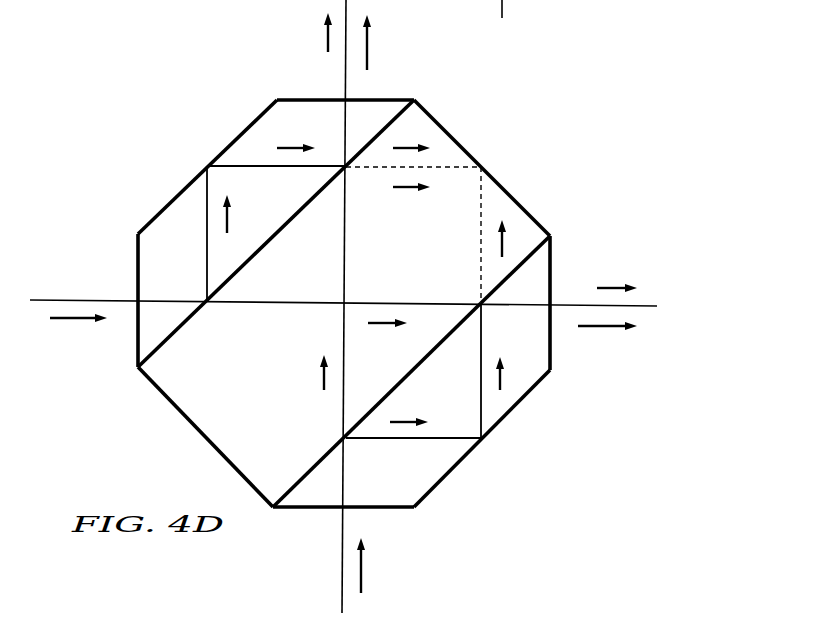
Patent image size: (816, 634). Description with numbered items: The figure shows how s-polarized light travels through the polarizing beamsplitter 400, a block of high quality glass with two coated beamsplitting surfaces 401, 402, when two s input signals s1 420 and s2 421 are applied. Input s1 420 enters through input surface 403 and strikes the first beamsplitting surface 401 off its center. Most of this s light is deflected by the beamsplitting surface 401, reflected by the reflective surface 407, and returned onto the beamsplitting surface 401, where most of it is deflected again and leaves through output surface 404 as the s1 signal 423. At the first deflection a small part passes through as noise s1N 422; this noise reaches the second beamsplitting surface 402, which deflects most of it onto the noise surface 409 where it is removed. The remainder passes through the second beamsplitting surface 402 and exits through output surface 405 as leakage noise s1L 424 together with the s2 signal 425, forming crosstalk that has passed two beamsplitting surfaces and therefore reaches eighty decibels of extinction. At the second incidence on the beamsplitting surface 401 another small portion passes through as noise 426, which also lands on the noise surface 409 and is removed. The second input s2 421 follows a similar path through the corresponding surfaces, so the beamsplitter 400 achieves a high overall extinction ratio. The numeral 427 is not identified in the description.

The polarizing beamsplitter 400 is at (160, 88).
The first beamsplitting surface 401 is at (178, 331).
The second beamsplitting surface 402 is at (316, 466).
The input surface 403 is at (138, 275).
The output surface 404 is at (272, 98).
The output surface 405 is at (549, 372).
The reflective surface 407 is at (195, 180).
The noise surface 409 is at (473, 155).
The input signal s1 420 is at (74, 355).
The input signal s2 421 is at (398, 577).
The noise s1N 422 is at (372, 352).
The s1 signal 423 is at (388, 33).
The leakage noise s1L 424 is at (615, 262).
The s2 signal 425 is at (614, 360).
The noise 426 is at (407, 143).
The reflected beam component 427 is at (508, 238).